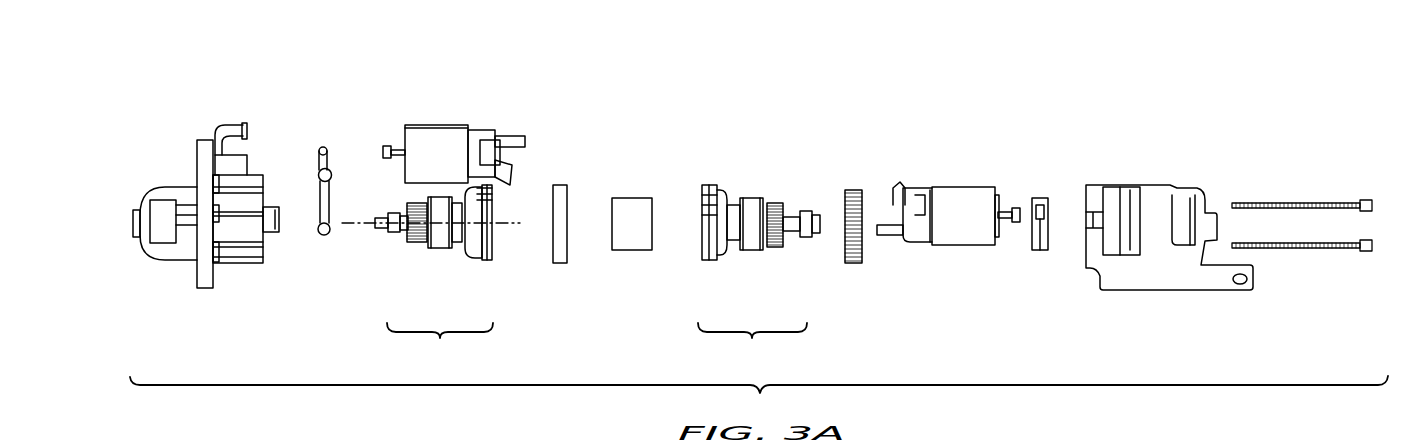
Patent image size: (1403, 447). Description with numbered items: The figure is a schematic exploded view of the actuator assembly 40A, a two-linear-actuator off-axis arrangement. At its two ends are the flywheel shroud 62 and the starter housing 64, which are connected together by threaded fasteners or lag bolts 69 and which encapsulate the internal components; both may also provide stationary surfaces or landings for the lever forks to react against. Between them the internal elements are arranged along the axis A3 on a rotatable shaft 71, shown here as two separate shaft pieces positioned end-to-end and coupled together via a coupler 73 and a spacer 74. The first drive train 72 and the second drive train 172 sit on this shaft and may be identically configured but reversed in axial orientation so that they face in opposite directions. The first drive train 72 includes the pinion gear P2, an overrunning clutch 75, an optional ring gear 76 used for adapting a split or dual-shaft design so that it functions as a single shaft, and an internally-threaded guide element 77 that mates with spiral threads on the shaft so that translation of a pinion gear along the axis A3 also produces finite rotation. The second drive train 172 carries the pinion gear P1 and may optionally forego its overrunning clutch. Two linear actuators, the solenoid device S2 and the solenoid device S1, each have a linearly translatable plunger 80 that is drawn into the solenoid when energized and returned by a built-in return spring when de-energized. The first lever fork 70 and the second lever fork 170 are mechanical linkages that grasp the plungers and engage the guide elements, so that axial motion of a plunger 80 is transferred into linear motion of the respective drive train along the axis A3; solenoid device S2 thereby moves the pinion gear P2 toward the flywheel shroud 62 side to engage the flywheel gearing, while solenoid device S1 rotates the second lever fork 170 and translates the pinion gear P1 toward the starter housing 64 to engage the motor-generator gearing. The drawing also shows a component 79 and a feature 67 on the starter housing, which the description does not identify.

The actuator assembly 40A is at (1133, 92).
The flywheel shroud 62 is at (229, 288).
The first lever fork 70 is at (325, 248).
The rotatable shaft 71 is at (382, 218).
The solenoid device S2 is at (469, 108).
The plunger 80 is at (397, 150).
The axis A3 is at (500, 226).
The first drive train 72 is at (440, 344).
The overrunning clutch 75 is at (420, 248).
The guide element 77 is at (458, 250).
The ring gear 76 is at (478, 265).
The spacer 74 is at (557, 265).
The coupler 73 is at (633, 263).
The pinion gear P2 is at (416, 246).
The pinion gear P1 is at (777, 253).
The second drive train 172 is at (752, 345).
The gear 79 is at (851, 272).
The solenoid device S1 is at (970, 176).
The second lever fork 170 is at (1042, 265).
The starter housing 64 is at (1163, 300).
The latch pocket 67 is at (1182, 213).
The lag bolts 69 is at (1300, 245).